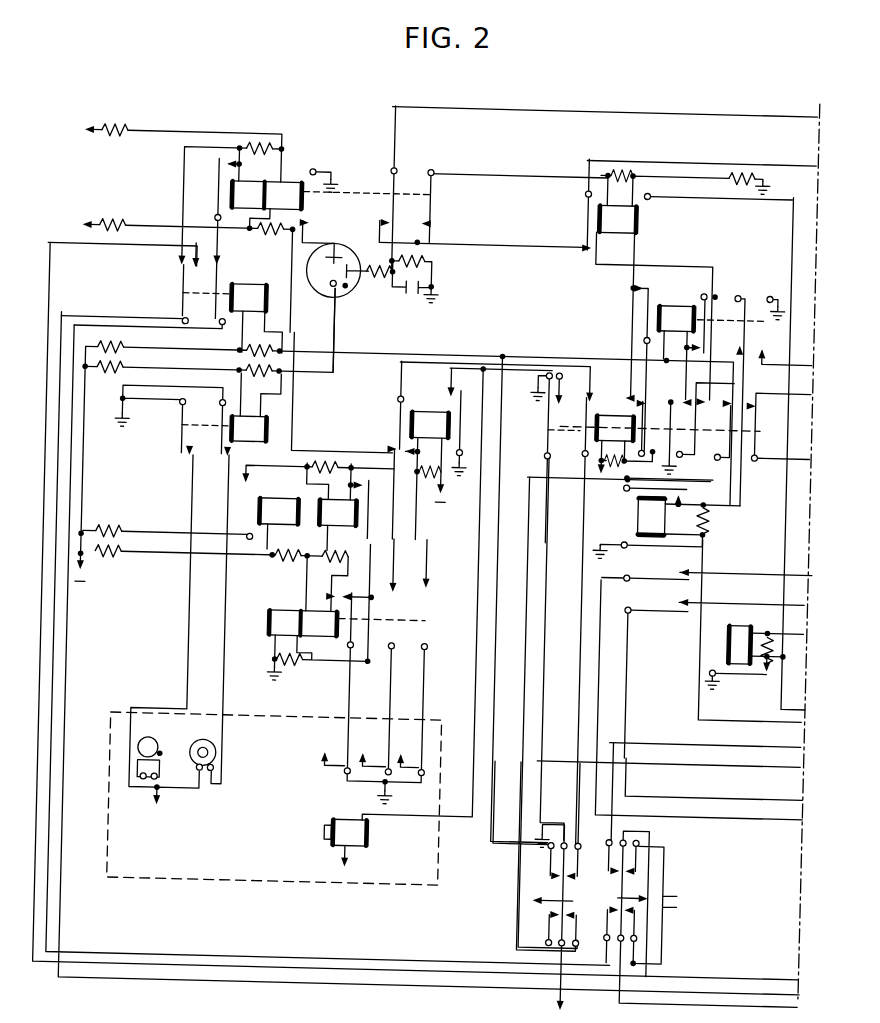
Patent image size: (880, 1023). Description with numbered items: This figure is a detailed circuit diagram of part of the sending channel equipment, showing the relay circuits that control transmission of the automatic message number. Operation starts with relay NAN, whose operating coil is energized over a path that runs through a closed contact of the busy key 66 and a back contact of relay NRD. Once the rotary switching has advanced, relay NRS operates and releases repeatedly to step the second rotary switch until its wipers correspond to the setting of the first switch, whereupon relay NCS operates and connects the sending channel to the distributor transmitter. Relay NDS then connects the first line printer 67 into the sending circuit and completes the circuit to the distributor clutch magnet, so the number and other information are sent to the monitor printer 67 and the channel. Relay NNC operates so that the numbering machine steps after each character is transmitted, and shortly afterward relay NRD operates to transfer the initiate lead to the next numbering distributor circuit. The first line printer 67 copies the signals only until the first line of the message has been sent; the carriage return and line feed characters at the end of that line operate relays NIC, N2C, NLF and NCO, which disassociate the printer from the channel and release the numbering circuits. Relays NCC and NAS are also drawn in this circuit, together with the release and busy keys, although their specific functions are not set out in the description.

The busy key 66 is at (600, 876).
The first line printer 67 is at (299, 890).
The relay NAN is at (267, 189).
The relay NRD is at (249, 290).
The relay NCC is at (617, 228).
The relay NNC is at (676, 311).
The relay NCS is at (615, 420).
The relay NDS is at (634, 516).
The relay NAS is at (248, 436).
The relay NLF is at (430, 417).
The relay NCO is at (279, 504).
The relay N1C NIC is at (337, 520).
The relay N2C is at (303, 616).
The relay NRS is at (736, 637).